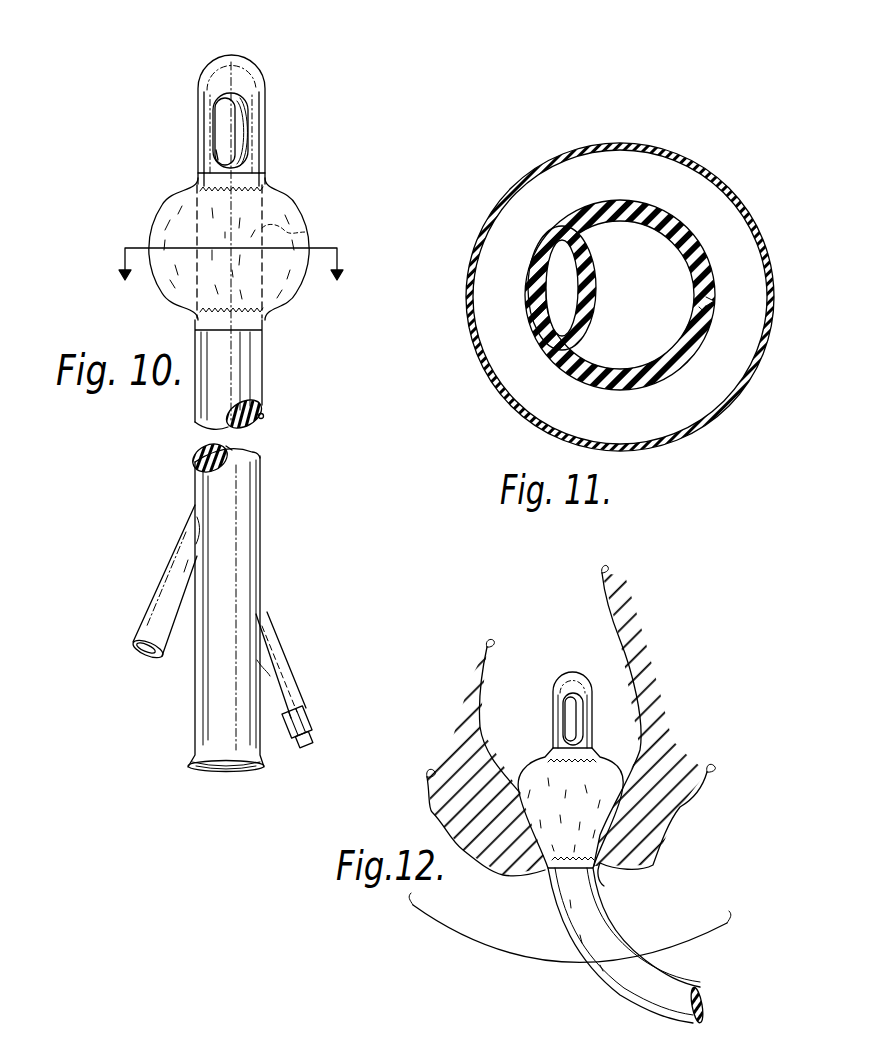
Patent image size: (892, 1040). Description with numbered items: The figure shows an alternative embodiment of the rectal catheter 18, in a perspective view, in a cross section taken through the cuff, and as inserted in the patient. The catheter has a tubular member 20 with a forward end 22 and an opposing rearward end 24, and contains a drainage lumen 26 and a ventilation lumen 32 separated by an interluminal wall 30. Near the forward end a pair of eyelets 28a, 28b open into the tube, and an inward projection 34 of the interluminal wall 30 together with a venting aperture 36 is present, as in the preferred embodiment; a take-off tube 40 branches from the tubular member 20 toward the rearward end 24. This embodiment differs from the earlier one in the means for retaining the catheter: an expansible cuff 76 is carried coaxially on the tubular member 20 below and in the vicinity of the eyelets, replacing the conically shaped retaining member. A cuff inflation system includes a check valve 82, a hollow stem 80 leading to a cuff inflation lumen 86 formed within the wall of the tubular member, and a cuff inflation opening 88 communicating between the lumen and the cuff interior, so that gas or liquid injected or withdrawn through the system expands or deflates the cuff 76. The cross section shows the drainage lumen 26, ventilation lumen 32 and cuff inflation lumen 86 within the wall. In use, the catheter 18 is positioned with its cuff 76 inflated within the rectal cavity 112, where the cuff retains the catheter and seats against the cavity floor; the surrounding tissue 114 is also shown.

In FIG. 10, the rectal catheter 18 is at (104, 132).
In FIG. 12, the rectal catheter 18 is at (526, 886).
In FIG. 10, the tubular member 20 is at (245, 505).
In FIG. 11, the tubular member 20 is at (642, 203).
In FIG. 10, the forward end 22 is at (250, 68).
In FIG. 10, the rearward end 24 is at (257, 770).
In FIG. 10, the drainage lumen 26 is at (258, 404).
In FIG. 11, the drainage lumen 26 is at (620, 295).
In FIG. 10, the eyelet 28a is at (246, 136).
In FIG. 10, the eyelet 28b is at (236, 120).
In FIG. 10, the interluminal wall 30 is at (228, 450).
In FIG. 10, the ventilation lumen 32 is at (198, 458).
In FIG. 11, the ventilation lumen 32 is at (556, 268).
In FIG. 10, the inward projection 34 is at (226, 128).
In FIG. 10, the venting aperture 36 is at (217, 155).
In FIG. 10, the take-off tube 40 is at (176, 596).
In FIG. 10, the expansible cuff 76 is at (300, 228).
In FIG. 11, the expansible cuff 76 is at (700, 168).
In FIG. 10, the hollow stem 80 is at (278, 678).
In FIG. 10, the check valve 82 is at (308, 716).
In FIG. 10, the cuff inflation lumen 86 is at (264, 416).
In FIG. 11, the cuff inflation lumen 86 is at (704, 318).
In FIG. 10, the cuff inflation opening 88 is at (312, 230).
In FIG. 11, the cuff inflation opening 88 is at (714, 304).
In FIG. 12, the rectal cavity 112 is at (606, 638).
In FIG. 12, the tissue opening / stoma 114 is at (604, 884).